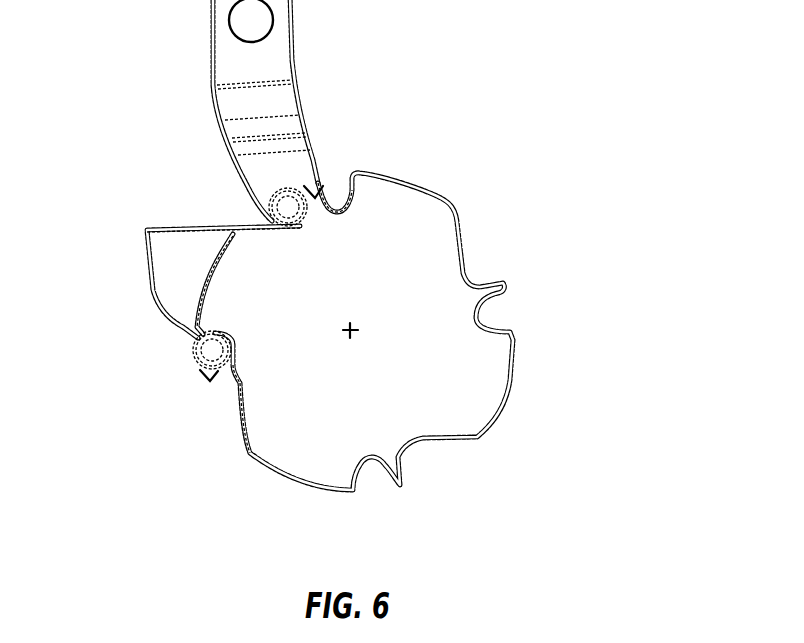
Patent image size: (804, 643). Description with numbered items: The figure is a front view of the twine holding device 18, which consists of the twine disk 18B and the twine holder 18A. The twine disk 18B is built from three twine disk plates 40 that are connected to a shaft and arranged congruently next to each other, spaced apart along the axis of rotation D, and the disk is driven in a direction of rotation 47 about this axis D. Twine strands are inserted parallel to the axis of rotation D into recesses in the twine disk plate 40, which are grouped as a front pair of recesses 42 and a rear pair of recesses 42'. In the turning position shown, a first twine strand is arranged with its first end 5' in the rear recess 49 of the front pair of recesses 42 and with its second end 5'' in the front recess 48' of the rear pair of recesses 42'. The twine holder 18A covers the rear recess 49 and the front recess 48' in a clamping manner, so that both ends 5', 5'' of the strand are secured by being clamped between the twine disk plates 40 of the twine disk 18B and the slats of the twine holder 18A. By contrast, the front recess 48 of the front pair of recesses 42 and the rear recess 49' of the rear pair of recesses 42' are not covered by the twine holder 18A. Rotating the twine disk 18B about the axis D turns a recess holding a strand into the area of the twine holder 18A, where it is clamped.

The twine holding device 18 is at (374, 245).
The twine holder 18A is at (200, 99).
The twine disk 18B is at (440, 184).
The front pair of recesses 42 is at (146, 421).
The rear pair of recesses 42' is at (341, 125).
The rear recess of the front pair of recesses 49 is at (134, 400).
The rear recess of the rear pair of recesses 49' is at (359, 157).
The front recess of the front pair of recesses 48 is at (223, 445).
The front recess of the rear pair of recesses 48' is at (219, 253).
The first end of the first twine strand 5' is at (174, 369).
The second end of the first twine strand 5'' is at (242, 185).
The direction of rotation 47 is at (375, 342).
The twine disk plate 40 is at (392, 412).
The axis of rotation D is at (354, 328).